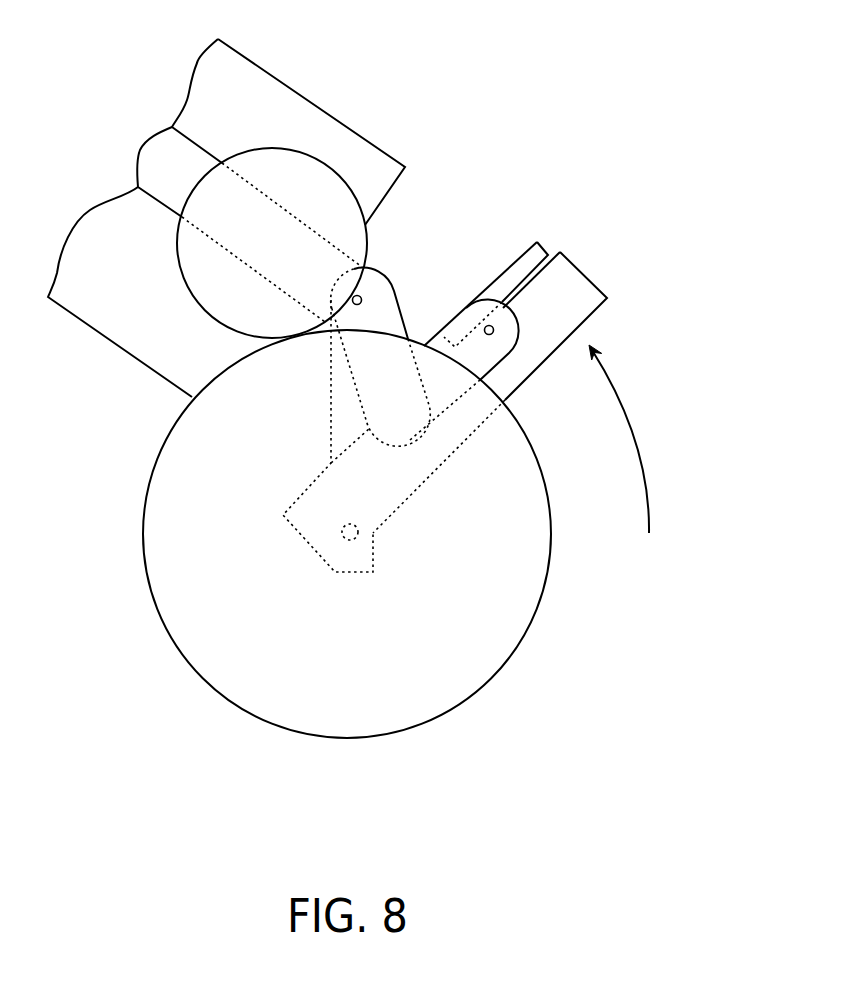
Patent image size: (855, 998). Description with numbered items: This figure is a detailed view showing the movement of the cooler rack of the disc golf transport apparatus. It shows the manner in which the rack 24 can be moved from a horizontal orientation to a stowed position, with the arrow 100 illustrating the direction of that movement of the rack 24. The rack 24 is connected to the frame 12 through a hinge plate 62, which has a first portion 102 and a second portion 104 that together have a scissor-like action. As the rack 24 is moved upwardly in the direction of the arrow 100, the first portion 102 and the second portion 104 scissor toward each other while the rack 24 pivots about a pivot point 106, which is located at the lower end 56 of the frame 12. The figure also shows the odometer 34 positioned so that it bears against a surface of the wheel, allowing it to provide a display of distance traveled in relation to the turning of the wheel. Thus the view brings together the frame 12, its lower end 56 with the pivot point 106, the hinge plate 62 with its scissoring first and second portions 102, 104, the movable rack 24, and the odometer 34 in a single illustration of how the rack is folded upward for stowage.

The frame 12 is at (150, 157).
The odometer 34 is at (321, 180).
The lower end 56 is at (329, 453).
The hinge plate 62 is at (377, 322).
The first portion 102 is at (368, 268).
The rack 24 is at (572, 318).
The second portion 104 is at (444, 397).
The pivot point 106 is at (348, 536).
The arrow 100 is at (638, 436).